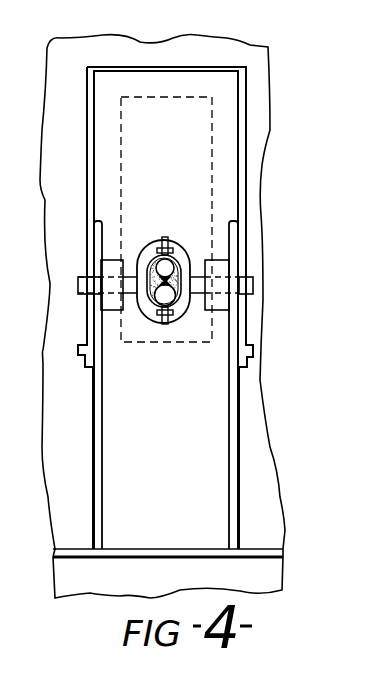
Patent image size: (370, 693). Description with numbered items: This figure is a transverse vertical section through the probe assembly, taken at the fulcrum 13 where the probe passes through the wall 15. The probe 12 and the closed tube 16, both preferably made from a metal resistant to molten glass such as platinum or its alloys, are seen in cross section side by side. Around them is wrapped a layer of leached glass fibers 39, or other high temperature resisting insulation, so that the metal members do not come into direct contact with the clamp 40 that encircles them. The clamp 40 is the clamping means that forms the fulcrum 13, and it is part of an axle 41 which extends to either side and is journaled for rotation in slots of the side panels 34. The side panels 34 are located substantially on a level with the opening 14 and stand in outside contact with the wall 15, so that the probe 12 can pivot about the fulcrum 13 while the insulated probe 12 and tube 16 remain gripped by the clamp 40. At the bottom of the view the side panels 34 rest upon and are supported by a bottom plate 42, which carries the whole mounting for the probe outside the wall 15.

The probe 12 is at (180, 300).
The fulcrum 13 is at (297, 313).
The opening 14 is at (183, 243).
The wall 15 is at (260, 97).
The tube 16 is at (179, 245).
The side panels 34 is at (95, 245).
The leached glass fibers 39 is at (155, 242).
The clamp 40 is at (152, 305).
The axle 41 is at (193, 292).
The bottom plate 42 is at (278, 537).